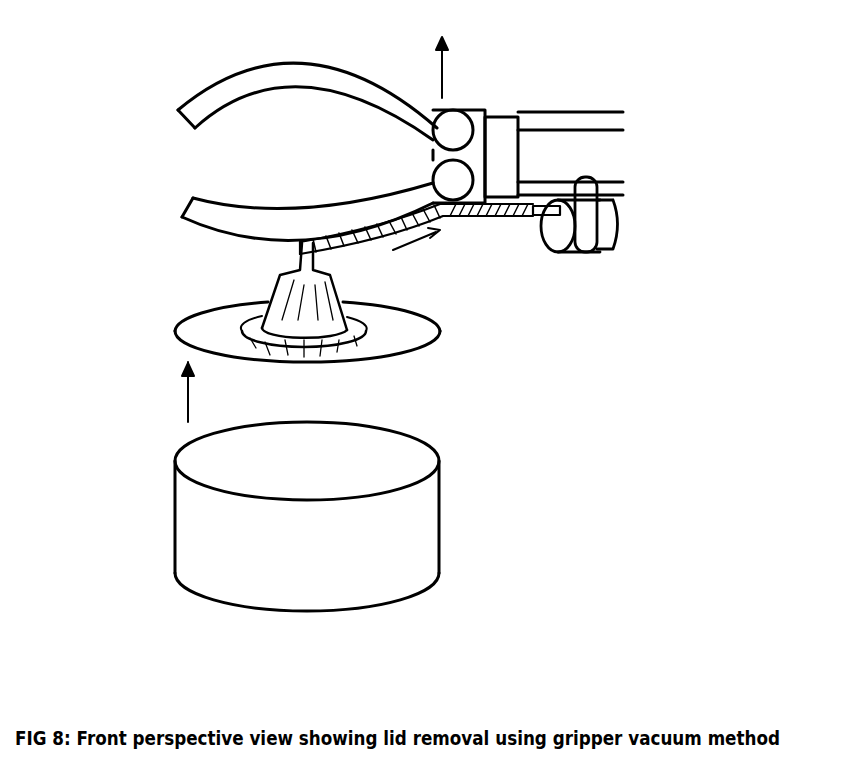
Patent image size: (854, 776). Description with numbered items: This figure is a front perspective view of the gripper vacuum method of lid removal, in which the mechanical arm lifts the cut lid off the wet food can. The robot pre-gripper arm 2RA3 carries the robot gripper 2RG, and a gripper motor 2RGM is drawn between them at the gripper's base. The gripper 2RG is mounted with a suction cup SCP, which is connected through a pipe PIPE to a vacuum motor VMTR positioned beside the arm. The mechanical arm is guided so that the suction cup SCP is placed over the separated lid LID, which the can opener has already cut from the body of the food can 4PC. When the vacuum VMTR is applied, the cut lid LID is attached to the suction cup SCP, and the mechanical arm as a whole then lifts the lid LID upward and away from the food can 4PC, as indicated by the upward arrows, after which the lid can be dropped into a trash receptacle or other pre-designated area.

The robot gripper 2RG is at (465, 110).
The gripper motor 2RGM is at (493, 117).
The robot pre-gripper arm 2RA3 is at (558, 113).
The pipe element PIPE is at (473, 216).
The vacuum motor VMTR is at (557, 238).
The suction cup SCP is at (323, 300).
The separated lid LID is at (423, 323).
The wet food can 4PC is at (430, 535).